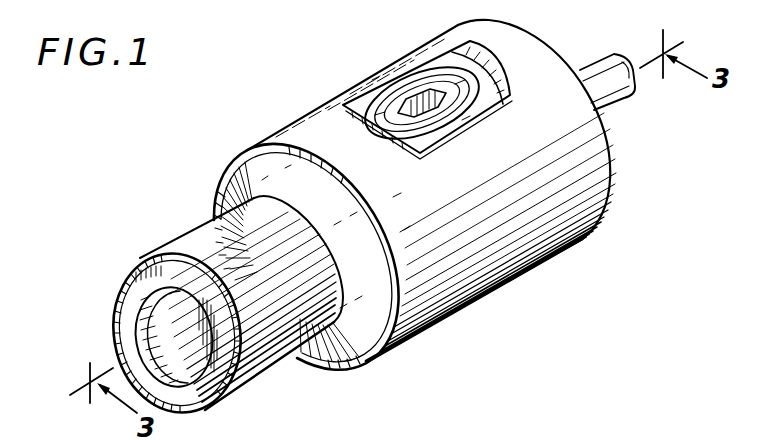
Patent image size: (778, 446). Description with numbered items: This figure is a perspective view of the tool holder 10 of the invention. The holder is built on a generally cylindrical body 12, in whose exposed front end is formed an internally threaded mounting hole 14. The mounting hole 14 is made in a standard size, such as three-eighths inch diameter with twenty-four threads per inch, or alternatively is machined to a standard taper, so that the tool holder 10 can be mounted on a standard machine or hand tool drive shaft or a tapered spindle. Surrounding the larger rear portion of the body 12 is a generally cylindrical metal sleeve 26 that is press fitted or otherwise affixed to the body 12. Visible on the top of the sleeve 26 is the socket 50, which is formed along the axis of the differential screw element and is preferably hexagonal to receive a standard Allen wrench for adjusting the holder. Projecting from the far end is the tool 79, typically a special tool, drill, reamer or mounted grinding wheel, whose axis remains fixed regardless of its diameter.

The tool holder 10 is at (508, 297).
The body 12 is at (341, 366).
The internally threaded mounting hole 14 is at (202, 387).
The metal sleeve 26 is at (417, 332).
The socket 50 is at (417, 90).
The tool 79 is at (620, 98).